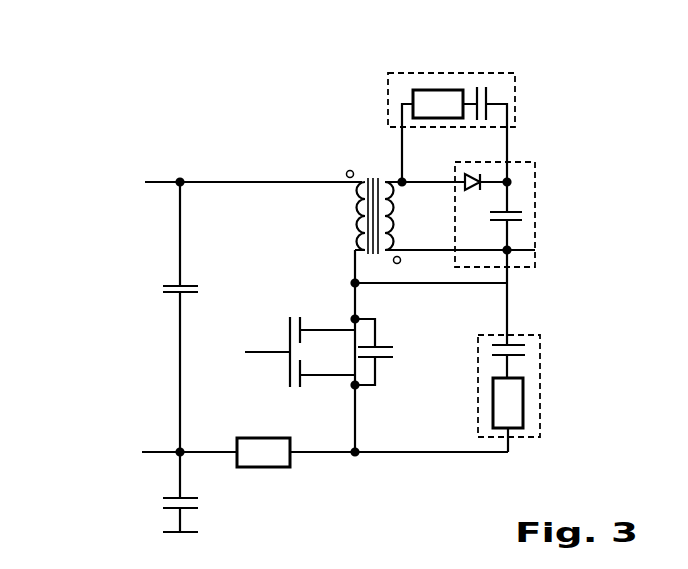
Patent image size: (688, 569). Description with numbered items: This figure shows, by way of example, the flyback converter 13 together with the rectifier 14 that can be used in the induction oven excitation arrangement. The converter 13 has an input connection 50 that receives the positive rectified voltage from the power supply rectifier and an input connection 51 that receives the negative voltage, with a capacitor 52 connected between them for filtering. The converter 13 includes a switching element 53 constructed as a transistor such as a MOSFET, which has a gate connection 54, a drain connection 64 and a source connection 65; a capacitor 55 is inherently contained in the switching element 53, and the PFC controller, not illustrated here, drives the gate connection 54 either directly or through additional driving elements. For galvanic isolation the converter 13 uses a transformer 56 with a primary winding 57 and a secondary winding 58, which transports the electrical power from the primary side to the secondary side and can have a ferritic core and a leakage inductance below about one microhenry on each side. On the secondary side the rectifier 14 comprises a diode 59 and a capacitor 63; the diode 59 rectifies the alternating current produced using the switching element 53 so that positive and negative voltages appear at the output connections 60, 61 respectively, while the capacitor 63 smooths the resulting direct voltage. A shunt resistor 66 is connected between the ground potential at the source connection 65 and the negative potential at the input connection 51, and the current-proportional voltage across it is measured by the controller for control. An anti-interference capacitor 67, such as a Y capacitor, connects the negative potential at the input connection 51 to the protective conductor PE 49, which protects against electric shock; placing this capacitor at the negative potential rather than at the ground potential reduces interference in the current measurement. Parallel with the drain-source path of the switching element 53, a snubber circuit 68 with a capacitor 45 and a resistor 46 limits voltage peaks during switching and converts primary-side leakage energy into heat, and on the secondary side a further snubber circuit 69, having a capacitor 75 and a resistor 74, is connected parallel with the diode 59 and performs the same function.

The converter 13 is at (236, 150).
The rectifier 14 is at (540, 195).
The capacitor 45 is at (528, 351).
The resistor 46 is at (523, 413).
The protective conductor PE 49 is at (145, 543).
The input connection 50 is at (165, 183).
The input connection 51 is at (155, 450).
The capacitor 52 is at (163, 290).
The switching element 53 is at (290, 318).
The gate connection 54 is at (250, 355).
The capacitor 55 is at (393, 352).
The transformer 56 is at (352, 268).
The primary winding 57 is at (355, 198).
The secondary winding 58 is at (397, 205).
The diode 59 is at (465, 178).
The output connection 60 is at (527, 180).
The output connection 61 is at (525, 252).
The capacitor 63 is at (523, 215).
The drain connection 64 is at (358, 320).
The source connection 65 is at (357, 387).
The shunt resistor 66 is at (275, 455).
The anti-interference capacitor 67 is at (198, 503).
The snubber circuit 68 is at (543, 390).
The snubber circuit 69 is at (522, 88).
The resistor 74 is at (435, 92).
The capacitor 75 is at (480, 85).